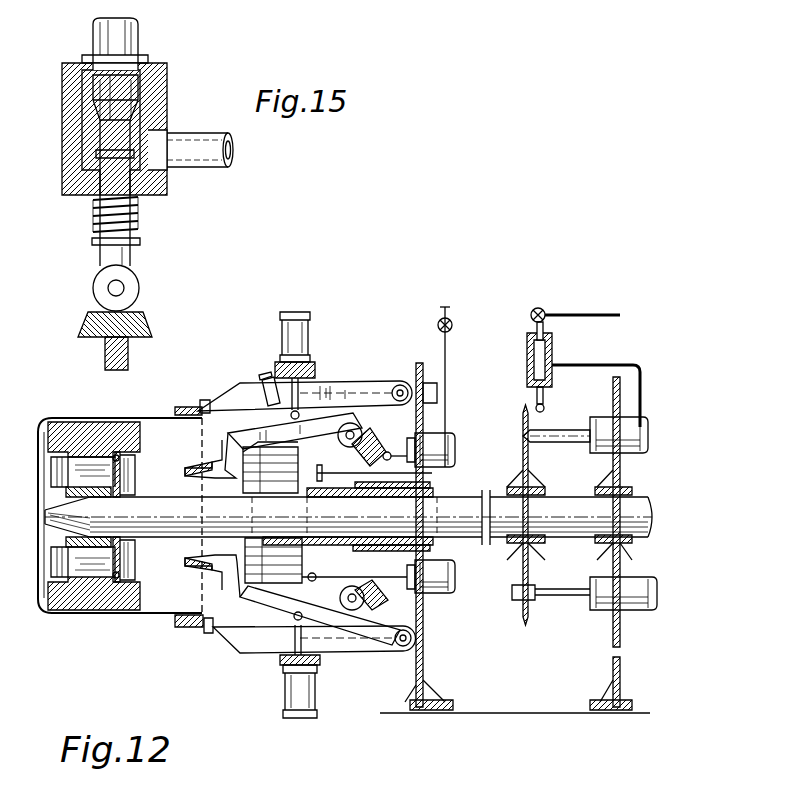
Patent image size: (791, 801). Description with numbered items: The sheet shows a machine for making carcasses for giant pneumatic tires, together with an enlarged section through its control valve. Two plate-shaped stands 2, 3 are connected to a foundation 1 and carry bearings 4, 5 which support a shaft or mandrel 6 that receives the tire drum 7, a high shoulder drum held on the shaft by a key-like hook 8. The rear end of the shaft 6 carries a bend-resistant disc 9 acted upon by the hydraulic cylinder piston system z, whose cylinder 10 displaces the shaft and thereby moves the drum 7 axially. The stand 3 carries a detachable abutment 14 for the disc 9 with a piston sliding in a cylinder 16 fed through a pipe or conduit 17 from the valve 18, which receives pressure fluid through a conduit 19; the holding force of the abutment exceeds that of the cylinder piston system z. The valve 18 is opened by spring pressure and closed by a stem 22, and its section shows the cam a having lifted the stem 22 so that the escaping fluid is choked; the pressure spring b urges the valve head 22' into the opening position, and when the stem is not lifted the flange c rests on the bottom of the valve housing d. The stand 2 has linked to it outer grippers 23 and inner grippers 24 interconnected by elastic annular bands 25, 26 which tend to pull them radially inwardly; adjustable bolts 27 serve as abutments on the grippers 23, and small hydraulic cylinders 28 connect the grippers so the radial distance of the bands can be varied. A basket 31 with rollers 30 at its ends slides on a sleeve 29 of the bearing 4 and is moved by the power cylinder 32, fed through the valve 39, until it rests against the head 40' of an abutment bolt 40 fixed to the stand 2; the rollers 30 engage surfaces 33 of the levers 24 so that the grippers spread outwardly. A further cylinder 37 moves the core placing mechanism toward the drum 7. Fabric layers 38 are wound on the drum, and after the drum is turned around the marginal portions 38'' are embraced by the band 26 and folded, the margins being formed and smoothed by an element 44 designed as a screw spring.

In FIG. 12, the foundation 1 is at (506, 713).
In FIG. 12, the stand 2 is at (416, 677).
In FIG. 12, the stand 3 is at (613, 663).
In FIG. 12, the bearing 4 is at (436, 492).
In FIG. 12, the bearing 5 is at (597, 491).
In FIG. 12, the shaft or mandrel 6 is at (162, 497).
In FIG. 12, the tire drum 7 is at (98, 422).
In FIG. 12, the key-like hook 8 is at (52, 502).
In FIG. 15, the bend-resistant disc 9 is at (128, 360).
In FIG. 12, the bend-resistant disc 9 is at (523, 463).
In FIG. 12, the cylinder 10 is at (600, 606).
In FIG. 12, the abutment 14 is at (560, 430).
In FIG. 12, the cylinder 16 is at (605, 420).
In FIG. 15, the pipe or conduit 17 is at (205, 164).
In FIG. 12, the pipe or conduit 17 is at (636, 364).
In FIG. 15, the valve 18 is at (158, 84).
In FIG. 12, the valve 18 is at (552, 344).
In FIG. 15, the conduit 19 is at (135, 45).
In FIG. 12, the conduit 19 is at (590, 317).
In FIG. 15, the stem 22 is at (134, 256).
In FIG. 12, the stem 22 is at (556, 398).
In FIG. 15, the valve head 22' is at (150, 97).
In FIG. 12, the outer grippers 23 is at (243, 383).
In FIG. 12, the inner grippers 24 is at (243, 434).
In FIG. 12, the elastic annular band 25 is at (190, 405).
In FIG. 12, the elastic annular band 26 is at (200, 466).
In FIG. 12, the adjustable bolt 27 is at (268, 400).
In FIG. 12, the hydraulic cylinder 28 is at (308, 345).
In FIG. 12, the sleeve 29 is at (302, 573).
In FIG. 12, the roller 30 is at (362, 432).
In FIG. 12, the basket 31 is at (388, 451).
In FIG. 12, the power cylinder 32 is at (455, 442).
In FIG. 12, the surfaces 33 is at (288, 467).
In FIG. 12, the cylinder 37 is at (457, 570).
In FIG. 12, the fabric layers 38 is at (120, 498).
In FIG. 12, the marginal portions 38'' is at (110, 514).
In FIG. 12, the valve 39 is at (452, 325).
In FIG. 12, the abutment bolt 40 is at (374, 460).
In FIG. 12, the head 40' is at (310, 473).
In FIG. 12, the element 44 is at (120, 576).
In FIG. 15, the cam a is at (93, 288).
In FIG. 15, the pressure spring b is at (96, 221).
In FIG. 15, the flange c is at (96, 153).
In FIG. 15, the valve housing d is at (65, 195).
In FIG. 12, the cylinder piston system z is at (582, 601).